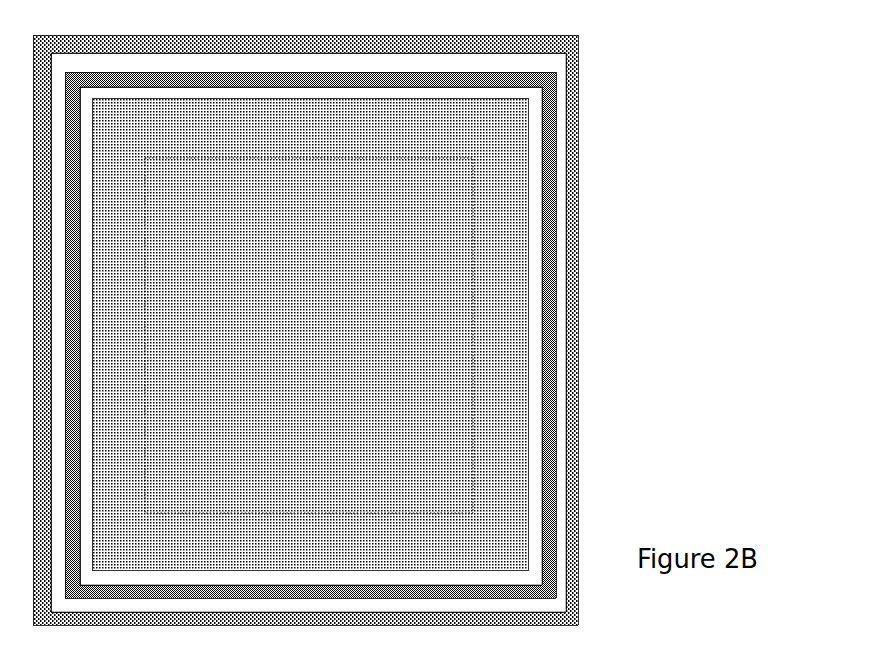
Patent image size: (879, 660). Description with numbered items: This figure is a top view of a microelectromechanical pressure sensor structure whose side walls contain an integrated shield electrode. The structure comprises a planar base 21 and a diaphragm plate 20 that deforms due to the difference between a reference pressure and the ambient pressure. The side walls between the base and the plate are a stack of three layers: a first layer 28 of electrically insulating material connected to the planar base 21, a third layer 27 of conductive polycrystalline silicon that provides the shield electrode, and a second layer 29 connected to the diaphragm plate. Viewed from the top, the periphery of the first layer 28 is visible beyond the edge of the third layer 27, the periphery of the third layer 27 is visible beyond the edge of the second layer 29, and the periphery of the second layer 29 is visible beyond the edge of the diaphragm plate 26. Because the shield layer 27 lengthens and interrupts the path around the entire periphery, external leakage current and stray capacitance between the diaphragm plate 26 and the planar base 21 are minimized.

The diaphragm plate 20 is at (447, 447).
The planar base 21 is at (577, 98).
The diaphragm plate 26 is at (510, 383).
The third layer 27 is at (549, 253).
The first layer 28 is at (563, 174).
The second layer 29 is at (535, 317).